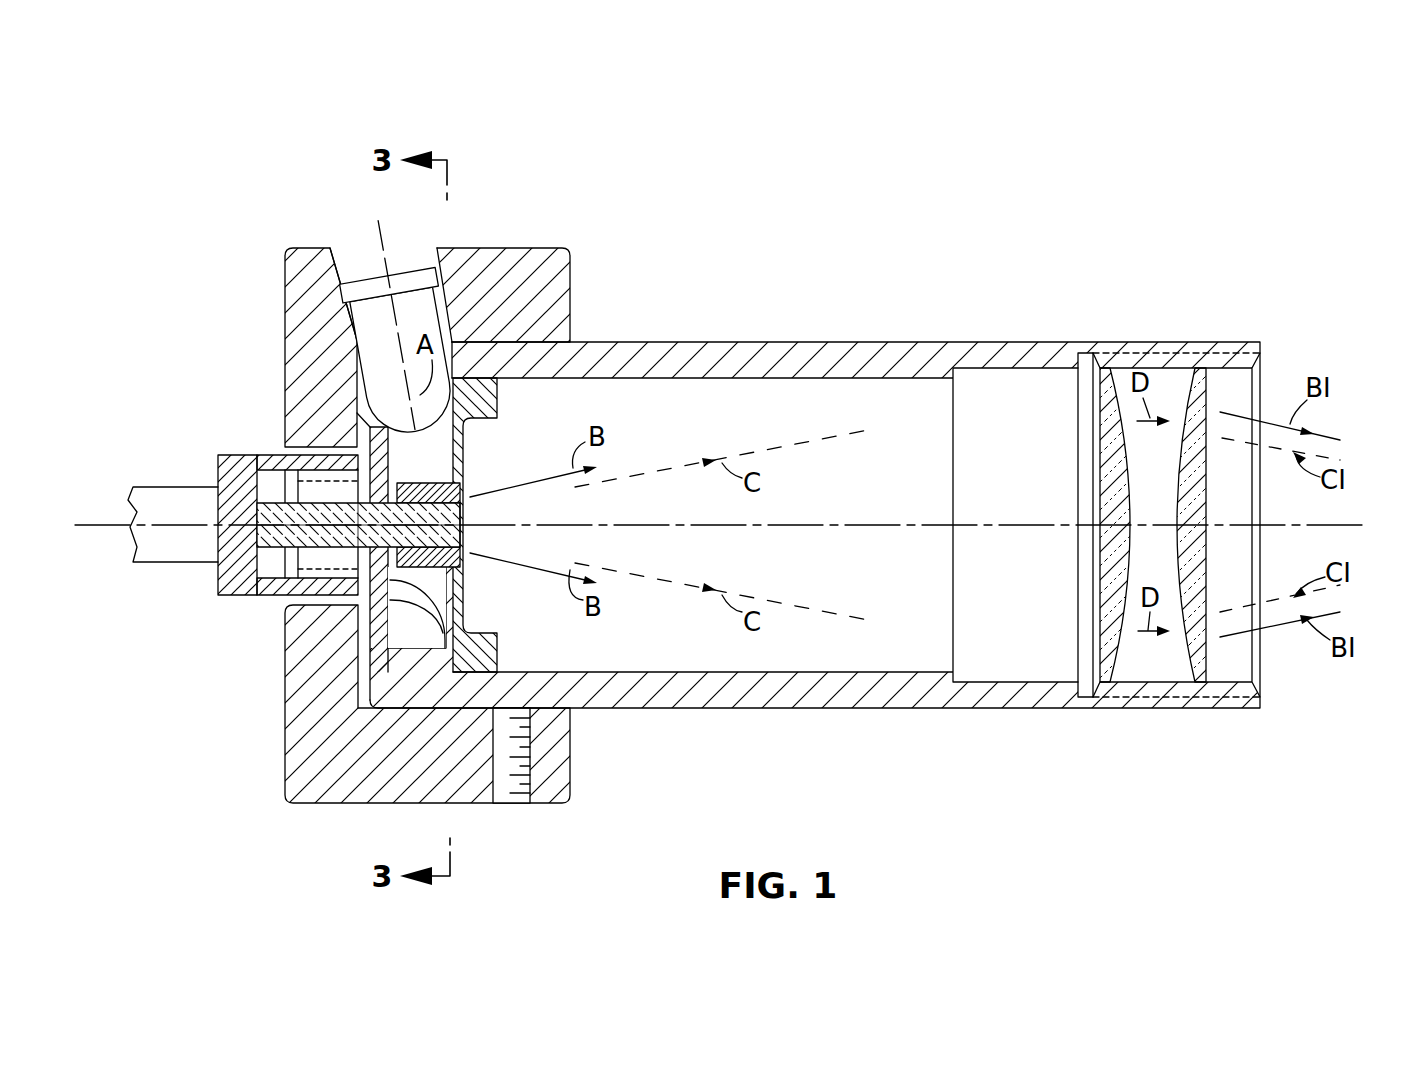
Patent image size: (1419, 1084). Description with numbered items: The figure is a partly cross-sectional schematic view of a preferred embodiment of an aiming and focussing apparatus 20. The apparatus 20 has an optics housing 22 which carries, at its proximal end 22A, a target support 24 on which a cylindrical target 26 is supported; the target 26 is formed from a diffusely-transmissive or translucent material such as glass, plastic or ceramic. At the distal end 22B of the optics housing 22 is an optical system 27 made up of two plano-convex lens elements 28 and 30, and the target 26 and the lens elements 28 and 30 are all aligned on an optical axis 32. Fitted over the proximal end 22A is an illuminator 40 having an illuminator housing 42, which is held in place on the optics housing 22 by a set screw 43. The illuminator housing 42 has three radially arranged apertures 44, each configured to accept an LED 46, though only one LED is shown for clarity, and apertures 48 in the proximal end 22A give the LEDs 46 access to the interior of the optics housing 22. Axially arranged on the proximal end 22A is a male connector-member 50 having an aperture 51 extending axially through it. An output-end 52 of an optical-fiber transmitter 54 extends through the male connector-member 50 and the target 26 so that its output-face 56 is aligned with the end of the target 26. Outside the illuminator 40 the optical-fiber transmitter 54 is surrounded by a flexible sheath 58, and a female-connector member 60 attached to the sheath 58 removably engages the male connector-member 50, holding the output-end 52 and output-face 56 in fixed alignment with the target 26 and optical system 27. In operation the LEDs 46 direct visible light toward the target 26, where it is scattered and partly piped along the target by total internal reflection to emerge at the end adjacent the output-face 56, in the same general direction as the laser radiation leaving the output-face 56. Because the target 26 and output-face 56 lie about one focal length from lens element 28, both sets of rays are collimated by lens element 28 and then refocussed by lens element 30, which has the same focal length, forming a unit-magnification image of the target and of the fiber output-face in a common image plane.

The aiming and focussing apparatus 20 is at (1055, 825).
The optics housing 22 is at (968, 338).
The proximal end of optics housing 22A is at (507, 363).
The distal end of optics housing 22B is at (1257, 338).
The target support 24 is at (496, 652).
The cylindrical target 26 is at (422, 480).
The optical system 27 is at (1173, 283).
The lens element 28 is at (1113, 382).
The lens element 30 is at (1187, 380).
The optical axis 32 is at (848, 525).
The illuminator 40 is at (578, 263).
The illuminator housing 42 is at (527, 250).
The set screw 43 is at (508, 797).
The aperture 44 is at (338, 268).
The LED 46 is at (358, 336).
The aperture 48 is at (370, 430).
The male connector-member 50 is at (310, 490).
The aperture 51 is at (372, 528).
The output-end 52 is at (360, 540).
The optical-fiber transmitter 54 is at (272, 553).
The output-face 56 is at (464, 532).
The flexible sheath 58 is at (200, 498).
The female-connector member 60 is at (228, 572).